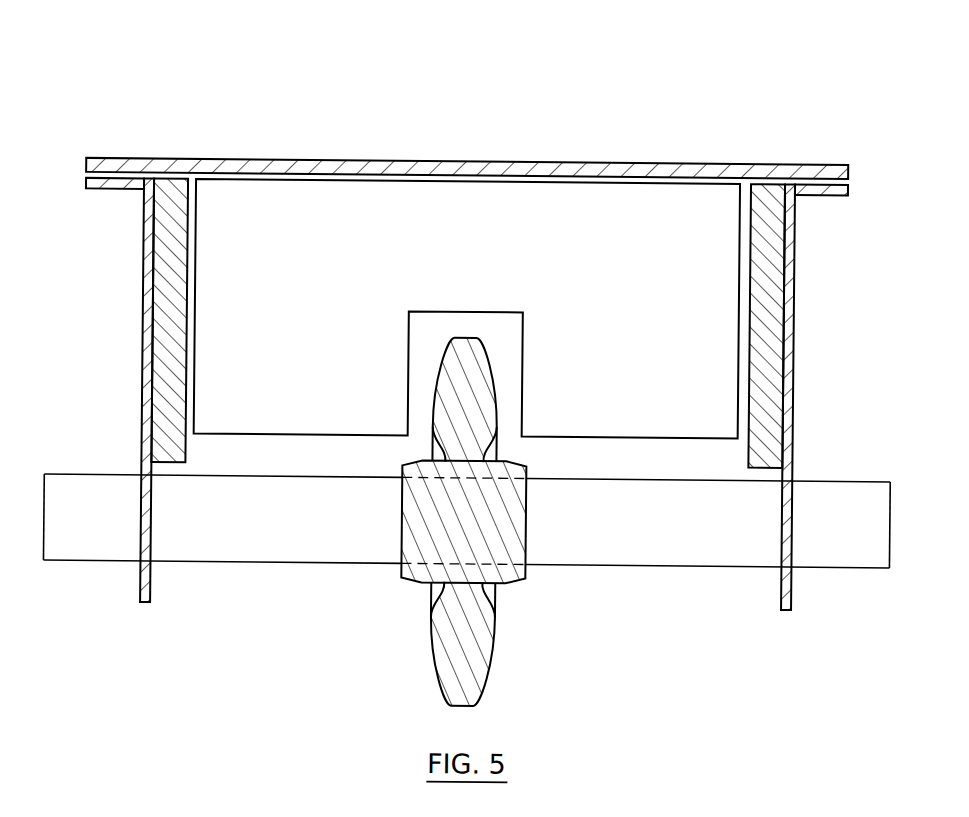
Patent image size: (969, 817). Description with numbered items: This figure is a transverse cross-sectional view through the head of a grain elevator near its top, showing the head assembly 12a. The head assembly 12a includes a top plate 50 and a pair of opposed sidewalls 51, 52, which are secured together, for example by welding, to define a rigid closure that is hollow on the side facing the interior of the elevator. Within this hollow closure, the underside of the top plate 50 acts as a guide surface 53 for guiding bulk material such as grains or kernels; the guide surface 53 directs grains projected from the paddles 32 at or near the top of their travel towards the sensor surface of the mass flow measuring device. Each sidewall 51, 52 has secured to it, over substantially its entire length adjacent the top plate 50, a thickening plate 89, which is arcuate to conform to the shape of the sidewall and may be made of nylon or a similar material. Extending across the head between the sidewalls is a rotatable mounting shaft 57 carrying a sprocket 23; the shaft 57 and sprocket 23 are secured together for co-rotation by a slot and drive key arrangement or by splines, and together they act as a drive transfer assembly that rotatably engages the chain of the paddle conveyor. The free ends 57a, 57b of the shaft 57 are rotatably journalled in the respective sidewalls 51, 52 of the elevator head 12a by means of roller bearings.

The head assembly 12a is at (569, 111).
The top plate 50 is at (277, 160).
The guide surface 53 is at (241, 176).
The sidewall 52 is at (143, 383).
The sidewall 51 is at (792, 339).
The thickening plate 89 is at (186, 463).
The paddles 32 is at (641, 342).
The rotatable mounting shaft 57 is at (467, 561).
The free end of shaft 57a is at (858, 558).
The free end of shaft 57b is at (72, 556).
The sprocket 23 is at (440, 666).